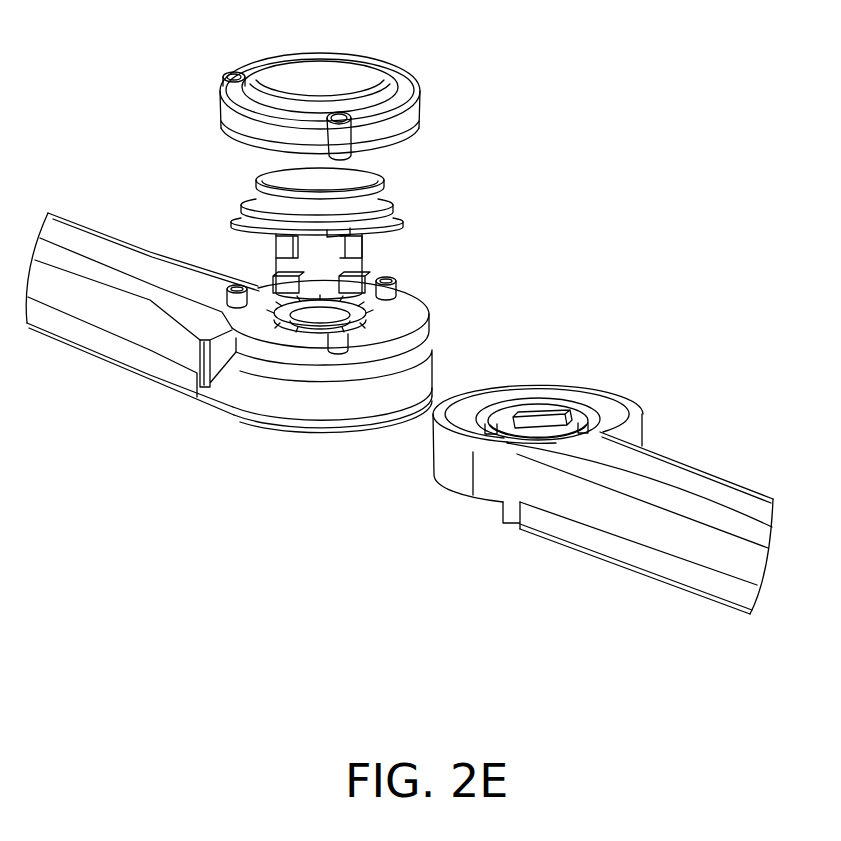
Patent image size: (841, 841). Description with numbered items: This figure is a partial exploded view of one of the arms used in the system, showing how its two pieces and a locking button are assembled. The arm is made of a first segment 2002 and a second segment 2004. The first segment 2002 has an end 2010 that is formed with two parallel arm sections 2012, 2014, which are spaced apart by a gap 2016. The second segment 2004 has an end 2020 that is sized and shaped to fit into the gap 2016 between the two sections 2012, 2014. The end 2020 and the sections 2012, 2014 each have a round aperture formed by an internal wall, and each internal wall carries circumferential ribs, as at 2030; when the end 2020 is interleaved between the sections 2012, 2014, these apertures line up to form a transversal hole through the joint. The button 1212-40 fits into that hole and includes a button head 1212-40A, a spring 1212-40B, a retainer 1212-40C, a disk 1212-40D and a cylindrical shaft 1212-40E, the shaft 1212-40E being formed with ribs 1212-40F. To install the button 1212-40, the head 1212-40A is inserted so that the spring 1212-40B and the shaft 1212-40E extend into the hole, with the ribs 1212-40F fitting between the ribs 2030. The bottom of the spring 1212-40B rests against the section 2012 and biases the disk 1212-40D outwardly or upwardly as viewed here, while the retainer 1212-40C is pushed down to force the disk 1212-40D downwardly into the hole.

The button 1212-40 is at (202, 102).
The button head 1212-40A is at (268, 185).
The spring 1212-40B is at (300, 292).
The retainer 1212-40C is at (395, 64).
The disk 1212-40D is at (391, 200).
The cylindrical shaft 1212-40E is at (326, 279).
The ribs 1212-40F is at (243, 233).
The first segment 2002 is at (122, 347).
The second segment 2004 is at (678, 458).
The end 2010 is at (232, 442).
The arm section 2012 is at (307, 427).
The arm section 2014 is at (428, 318).
The gap 2016 is at (433, 360).
The end 2020 is at (444, 460).
The circumferential ribs 2030 is at (553, 410).